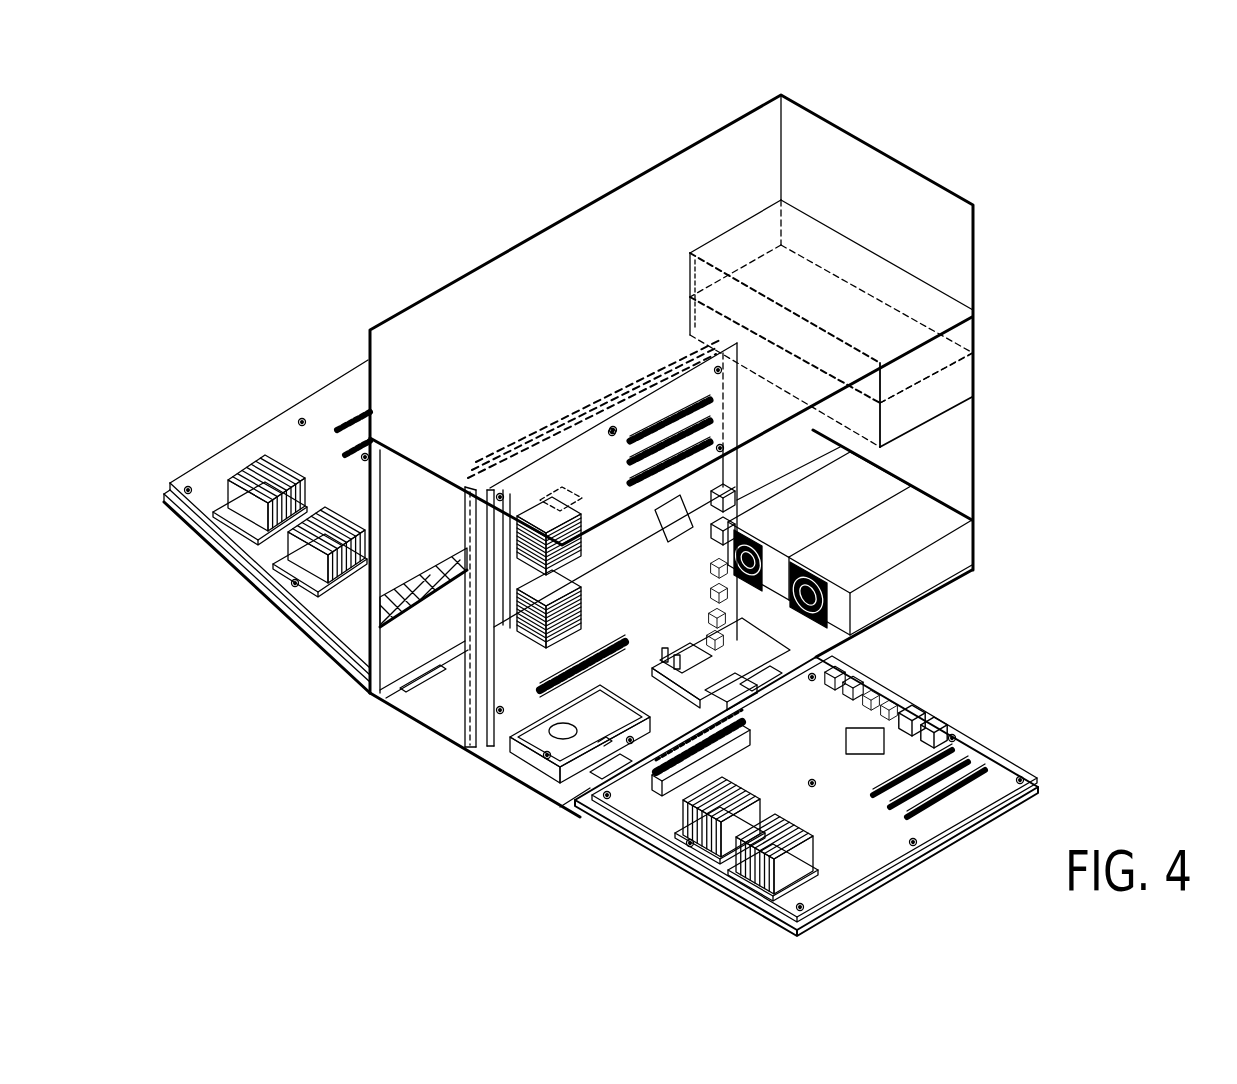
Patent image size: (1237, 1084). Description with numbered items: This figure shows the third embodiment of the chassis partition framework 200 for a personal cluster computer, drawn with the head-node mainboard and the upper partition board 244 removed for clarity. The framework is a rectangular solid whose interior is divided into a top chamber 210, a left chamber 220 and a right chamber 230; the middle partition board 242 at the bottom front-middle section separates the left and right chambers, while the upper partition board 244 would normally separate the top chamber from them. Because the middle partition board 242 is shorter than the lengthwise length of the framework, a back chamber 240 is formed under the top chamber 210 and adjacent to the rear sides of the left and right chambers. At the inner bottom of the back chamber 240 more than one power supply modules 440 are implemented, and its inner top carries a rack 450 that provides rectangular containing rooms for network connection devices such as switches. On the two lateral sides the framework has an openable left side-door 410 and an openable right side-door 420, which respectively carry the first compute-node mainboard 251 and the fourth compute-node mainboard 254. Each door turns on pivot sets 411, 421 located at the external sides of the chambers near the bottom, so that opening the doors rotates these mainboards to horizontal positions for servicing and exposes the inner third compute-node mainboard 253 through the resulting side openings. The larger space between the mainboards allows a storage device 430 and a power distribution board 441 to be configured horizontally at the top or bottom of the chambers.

The chassis partition framework 200 is at (1062, 662).
The top chamber 210 is at (843, 165).
The left chamber 220 is at (434, 690).
The right chamber 230 is at (525, 702).
The back chamber 240 is at (942, 446).
The middle partition board 242 is at (470, 708).
The upper partition board 244 is at (903, 282).
The first compute-node mainboard 251 is at (285, 443).
The third compute-node mainboard 253 is at (505, 710).
The fourth compute-node mainboard 254 is at (937, 747).
The left side-door 410 is at (258, 588).
The pivot set 411 is at (423, 652).
The right side-door 420 is at (690, 866).
The pivot set 421 is at (623, 775).
The storage device 430 is at (556, 750).
The power supply modules 440 is at (853, 487).
The power distribution board 441 is at (775, 630).
The rack 450 is at (962, 370).